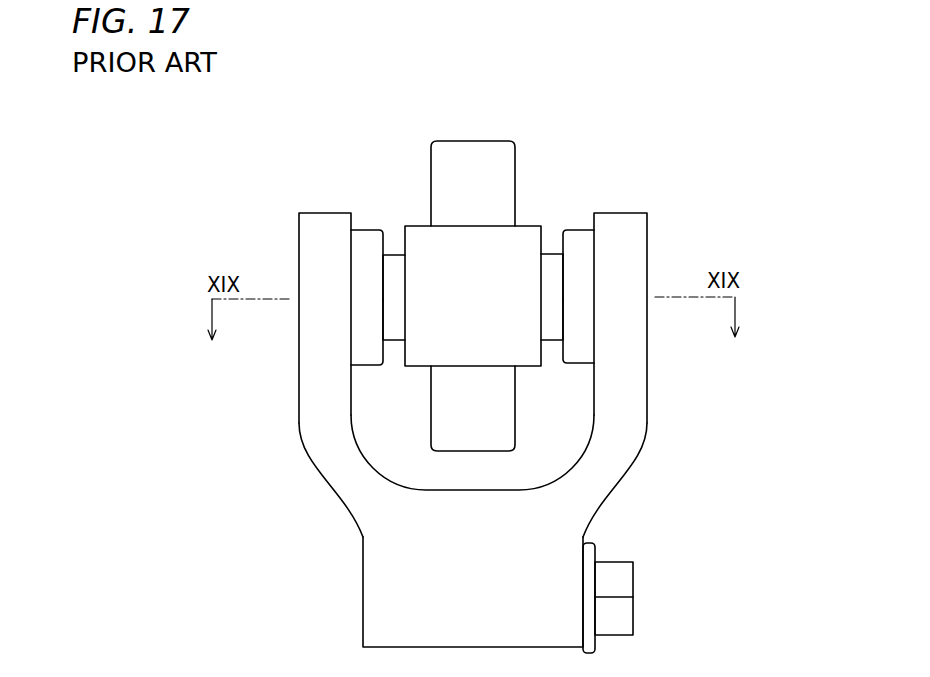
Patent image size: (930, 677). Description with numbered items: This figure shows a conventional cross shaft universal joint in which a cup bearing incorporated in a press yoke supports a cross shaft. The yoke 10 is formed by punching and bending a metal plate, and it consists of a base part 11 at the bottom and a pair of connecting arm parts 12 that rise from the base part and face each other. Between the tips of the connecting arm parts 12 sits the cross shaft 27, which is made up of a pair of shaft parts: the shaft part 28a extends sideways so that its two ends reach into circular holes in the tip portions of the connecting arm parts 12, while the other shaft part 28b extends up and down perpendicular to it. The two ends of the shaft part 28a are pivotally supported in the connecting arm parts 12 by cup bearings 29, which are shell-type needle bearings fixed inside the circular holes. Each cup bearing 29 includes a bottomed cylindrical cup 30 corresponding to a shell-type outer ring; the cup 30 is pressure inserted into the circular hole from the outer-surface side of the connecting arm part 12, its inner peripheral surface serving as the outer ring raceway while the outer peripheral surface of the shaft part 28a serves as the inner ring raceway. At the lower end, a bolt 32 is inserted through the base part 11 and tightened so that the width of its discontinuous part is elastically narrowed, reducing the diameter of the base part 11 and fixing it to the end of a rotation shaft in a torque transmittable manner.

The yoke 10 is at (498, 430).
The base part 11 is at (385, 578).
The connecting arm parts 12 is at (315, 243).
The cross shaft 27 is at (472, 262).
The shaft part 28a is at (393, 290).
The shaft part 28b is at (468, 160).
The cup bearings 29 is at (363, 308).
The cups 30 is at (365, 338).
The bolt 32 is at (623, 617).